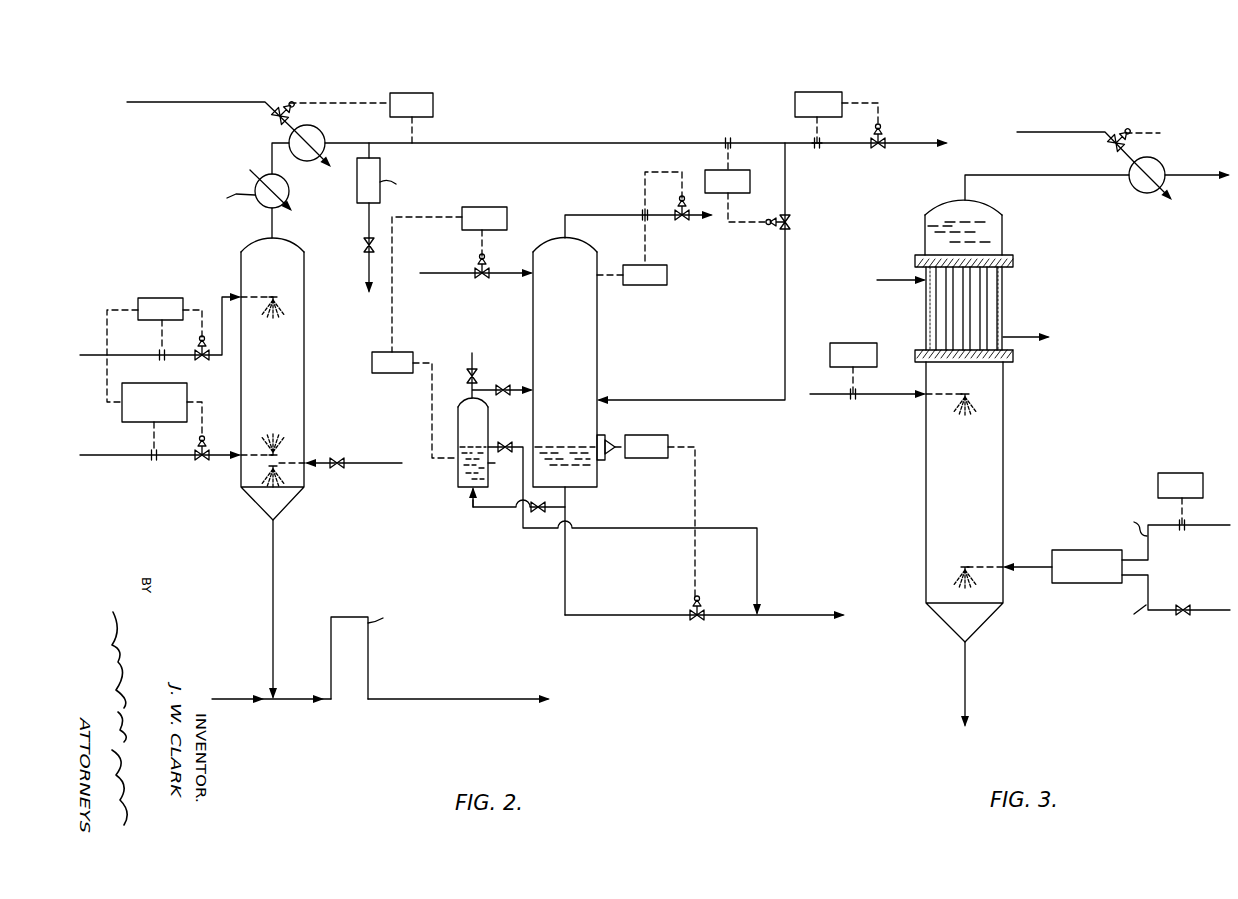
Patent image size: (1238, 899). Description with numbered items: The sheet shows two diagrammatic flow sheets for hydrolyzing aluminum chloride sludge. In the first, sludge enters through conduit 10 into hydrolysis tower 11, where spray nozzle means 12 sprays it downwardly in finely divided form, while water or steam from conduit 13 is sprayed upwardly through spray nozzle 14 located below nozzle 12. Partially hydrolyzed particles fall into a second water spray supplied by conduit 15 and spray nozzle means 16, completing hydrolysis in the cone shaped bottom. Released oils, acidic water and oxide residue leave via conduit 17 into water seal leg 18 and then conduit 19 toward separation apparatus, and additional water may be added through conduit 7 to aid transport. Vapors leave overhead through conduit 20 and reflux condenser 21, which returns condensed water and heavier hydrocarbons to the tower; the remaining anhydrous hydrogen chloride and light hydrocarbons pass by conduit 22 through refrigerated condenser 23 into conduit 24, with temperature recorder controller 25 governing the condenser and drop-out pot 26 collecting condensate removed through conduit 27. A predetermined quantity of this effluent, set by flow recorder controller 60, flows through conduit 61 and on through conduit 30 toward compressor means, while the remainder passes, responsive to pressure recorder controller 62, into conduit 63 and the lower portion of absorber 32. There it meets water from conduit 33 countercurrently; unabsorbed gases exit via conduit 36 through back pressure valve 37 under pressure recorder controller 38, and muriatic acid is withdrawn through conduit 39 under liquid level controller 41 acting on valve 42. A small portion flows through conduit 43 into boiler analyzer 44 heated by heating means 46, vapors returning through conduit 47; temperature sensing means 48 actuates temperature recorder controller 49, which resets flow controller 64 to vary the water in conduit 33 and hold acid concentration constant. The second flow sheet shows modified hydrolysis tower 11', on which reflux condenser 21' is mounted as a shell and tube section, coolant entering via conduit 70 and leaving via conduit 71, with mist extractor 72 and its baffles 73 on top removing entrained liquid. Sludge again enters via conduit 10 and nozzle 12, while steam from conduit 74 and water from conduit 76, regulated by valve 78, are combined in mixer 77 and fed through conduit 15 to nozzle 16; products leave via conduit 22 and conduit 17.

In FIG. 2, the conduit 7 is at (232, 697).
In FIG. 2, the conduit 10 is at (222, 306).
In FIG. 3, the conduit 10 is at (892, 396).
In FIG. 2, the hydrolysis tower 11 is at (291, 379).
In FIG. 3, the hydrolysis tower 11' is at (984, 502).
In FIG. 2, the spray nozzle means 12 is at (273, 297).
In FIG. 3, the spray nozzle means 12 is at (968, 394).
In FIG. 2, the conduit 13 is at (180, 457).
In FIG. 2, the spray nozzle 14 is at (276, 455).
In FIG. 2, the conduit 15 is at (362, 465).
In FIG. 3, the conduit 15 is at (1032, 570).
In FIG. 2, the spray nozzle means 16 is at (270, 468).
In FIG. 3, the spray nozzle means 16 is at (966, 569).
In FIG. 2, the conduit 17 is at (275, 581).
In FIG. 3, the conduit 17 is at (968, 673).
In FIG. 2, the water seal leg 18 is at (348, 617).
In FIG. 2, the conduit 19 is at (474, 699).
In FIG. 2, the conduit 20 is at (272, 224).
In FIG. 2, the reflux condenser 21 is at (225, 192).
In FIG. 3, the reflux condenser 21' is at (978, 308).
In FIG. 2, the conduit 22 is at (272, 148).
In FIG. 3, the conduit 22 is at (1030, 175).
In FIG. 2, the refrigerated condenser 23 is at (325, 135).
In FIG. 3, the refrigerated condenser 23 is at (1162, 163).
In FIG. 2, the conduit 24 is at (558, 143).
In FIG. 3, the conduit 24 is at (1195, 178).
In FIG. 2, the temperature recorder controller 25 is at (433, 96).
In FIG. 2, the drop-out pot 26 is at (380, 165).
In FIG. 2, the conduit 27 is at (366, 231).
In FIG. 2, the conduit 30 is at (905, 146).
In FIG. 2, the absorber 32 is at (597, 333).
In FIG. 2, the conduit 33 is at (505, 273).
In FIG. 2, the conduit 36 is at (582, 215).
In FIG. 2, the back pressure valve 37 is at (688, 222).
In FIG. 2, the pressure recorder controller 38 is at (667, 275).
In FIG. 2, the conduit 39 is at (565, 580).
In FIG. 2, the liquid level controller 41 is at (650, 458).
In FIG. 2, the valve 42 is at (702, 622).
In FIG. 2, the conduit 43 is at (490, 510).
In FIG. 2, the boiler analyzer 44 is at (488, 418).
In FIG. 2, the heating means 46 is at (488, 482).
In FIG. 2, the conduit 47 is at (520, 388).
In FIG. 2, the temperature sensing means 48 is at (458, 455).
In FIG. 2, the temperature recorder controller 49 is at (413, 353).
In FIG. 2, the flow recorder controller 60 is at (842, 96).
In FIG. 2, the conduit 61 is at (820, 146).
In FIG. 2, the pressure recorder controller 62 is at (750, 172).
In FIG. 2, the conduit 63 is at (785, 265).
In FIG. 2, the flow controller 64 is at (507, 211).
In FIG. 3, the conduit 70 is at (890, 282).
In FIG. 3, the conduit 71 is at (1032, 340).
In FIG. 3, the mist extractor 72 is at (1002, 233).
In FIG. 3, the baffles 73 is at (928, 232).
In FIG. 3, the conduit 74 is at (1148, 550).
In FIG. 3, the conduit 76 is at (1148, 587).
In FIG. 3, the mixer 77 is at (1060, 548).
In FIG. 3, the valve 78 is at (1192, 626).